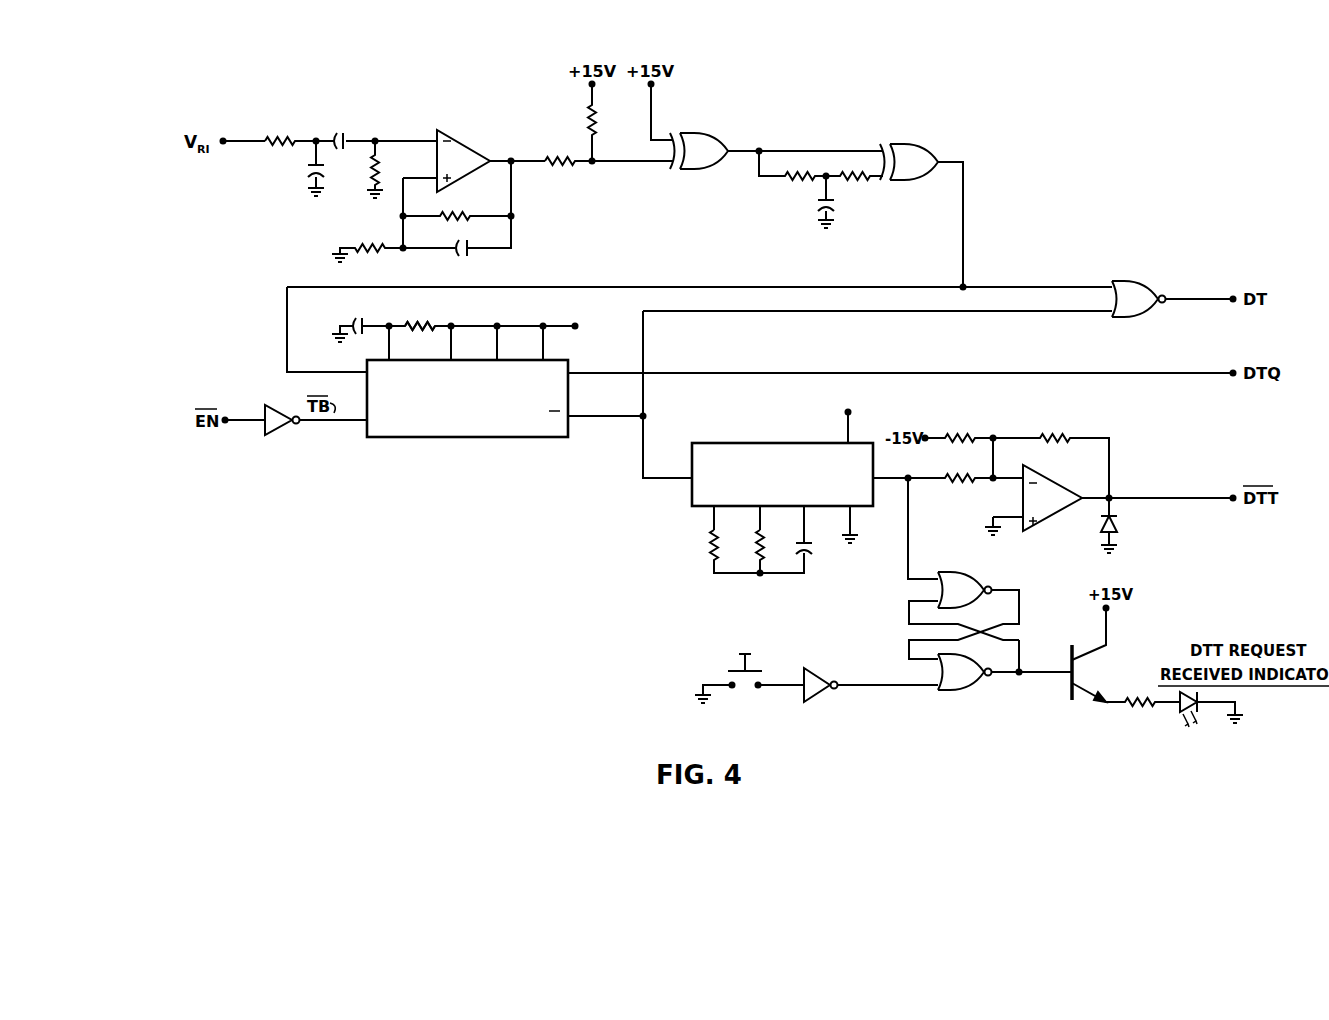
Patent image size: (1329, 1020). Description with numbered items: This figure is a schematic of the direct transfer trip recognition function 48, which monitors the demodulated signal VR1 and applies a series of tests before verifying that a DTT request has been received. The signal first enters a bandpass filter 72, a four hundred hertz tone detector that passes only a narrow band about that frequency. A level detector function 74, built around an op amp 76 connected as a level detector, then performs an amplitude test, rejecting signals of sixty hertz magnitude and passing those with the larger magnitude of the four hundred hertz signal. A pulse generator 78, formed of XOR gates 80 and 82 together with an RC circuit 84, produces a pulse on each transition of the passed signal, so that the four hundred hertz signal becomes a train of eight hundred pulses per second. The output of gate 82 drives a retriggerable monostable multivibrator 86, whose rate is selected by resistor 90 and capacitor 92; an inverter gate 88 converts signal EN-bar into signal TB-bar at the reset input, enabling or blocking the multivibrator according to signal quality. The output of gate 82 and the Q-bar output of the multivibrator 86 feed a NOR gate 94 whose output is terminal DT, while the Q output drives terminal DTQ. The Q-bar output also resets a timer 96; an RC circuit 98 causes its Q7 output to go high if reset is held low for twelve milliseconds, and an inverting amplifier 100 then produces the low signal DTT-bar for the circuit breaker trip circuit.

The DTT recognition function 48 is at (1094, 253).
The bandpass filter 72 is at (289, 169).
The level detector function 74 is at (540, 113).
The op amp 76 is at (466, 173).
The pulse generator 78 is at (902, 119).
The XOR gate 80 is at (706, 130).
The XOR gate 82 is at (920, 141).
The RC circuit 84 is at (817, 186).
The retriggerable monostable multivibrator 86 is at (522, 439).
The inverter gate 88 is at (280, 430).
The resistor 90 is at (421, 320).
The capacitor 92 is at (351, 314).
The NOR gate 94 is at (1147, 316).
The timer 96 is at (718, 442).
The RC circuit 98 is at (702, 547).
The inverting amplifier 100 is at (1093, 478).